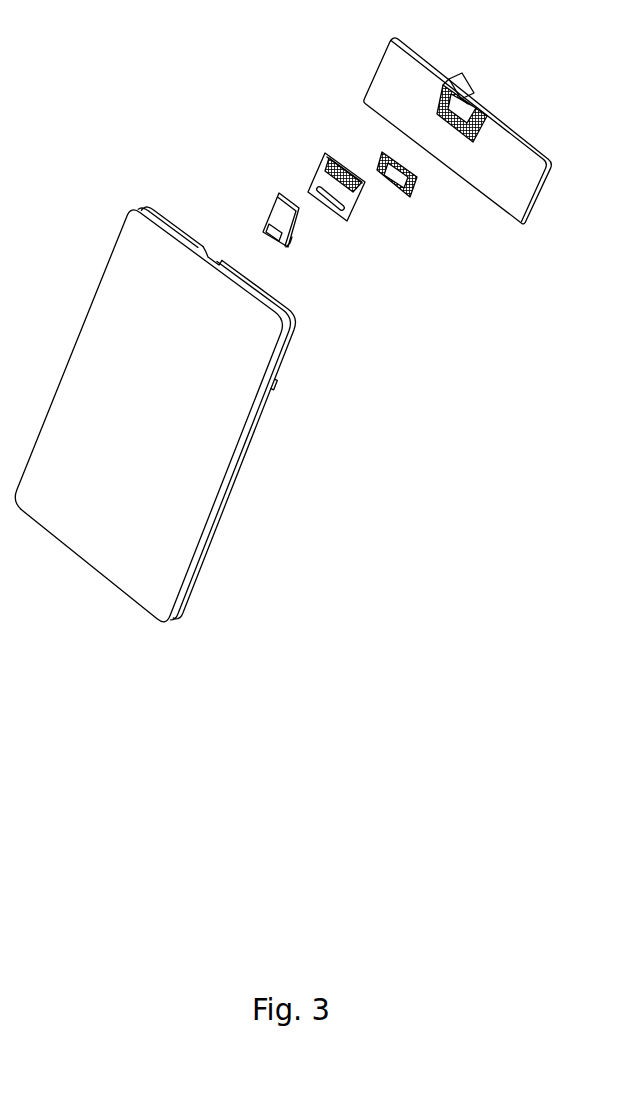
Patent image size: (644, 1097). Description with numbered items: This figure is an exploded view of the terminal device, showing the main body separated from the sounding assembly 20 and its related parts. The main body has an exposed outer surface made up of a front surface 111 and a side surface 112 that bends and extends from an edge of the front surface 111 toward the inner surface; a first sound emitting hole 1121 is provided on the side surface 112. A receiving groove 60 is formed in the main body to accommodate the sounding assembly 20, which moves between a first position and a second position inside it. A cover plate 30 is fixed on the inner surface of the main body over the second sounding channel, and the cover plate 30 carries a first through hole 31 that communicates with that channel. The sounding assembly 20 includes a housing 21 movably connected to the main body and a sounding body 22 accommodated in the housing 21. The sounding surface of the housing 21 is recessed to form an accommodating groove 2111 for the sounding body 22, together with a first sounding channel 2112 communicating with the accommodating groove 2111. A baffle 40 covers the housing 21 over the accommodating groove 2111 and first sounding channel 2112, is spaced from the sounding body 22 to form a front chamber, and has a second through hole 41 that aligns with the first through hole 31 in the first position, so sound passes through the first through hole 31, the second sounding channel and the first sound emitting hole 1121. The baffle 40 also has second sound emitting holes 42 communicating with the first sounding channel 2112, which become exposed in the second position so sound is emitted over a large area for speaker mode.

The front surface 111 is at (183, 540).
The side surface 112 is at (232, 483).
The first sound emitting hole 1121 is at (216, 258).
The receiving groove 60 is at (275, 382).
The cover plate 30 is at (287, 215).
The first through hole 31 is at (286, 247).
The baffle 40 is at (320, 170).
The second through hole 41 is at (312, 191).
The second sound emitting holes 42 is at (328, 159).
The sounding assembly 20 is at (475, 151).
The housing 21 is at (452, 155).
The accommodating groove 2111 is at (470, 120).
The first sounding channel 2112 is at (462, 97).
The sounding body 22 is at (407, 196).